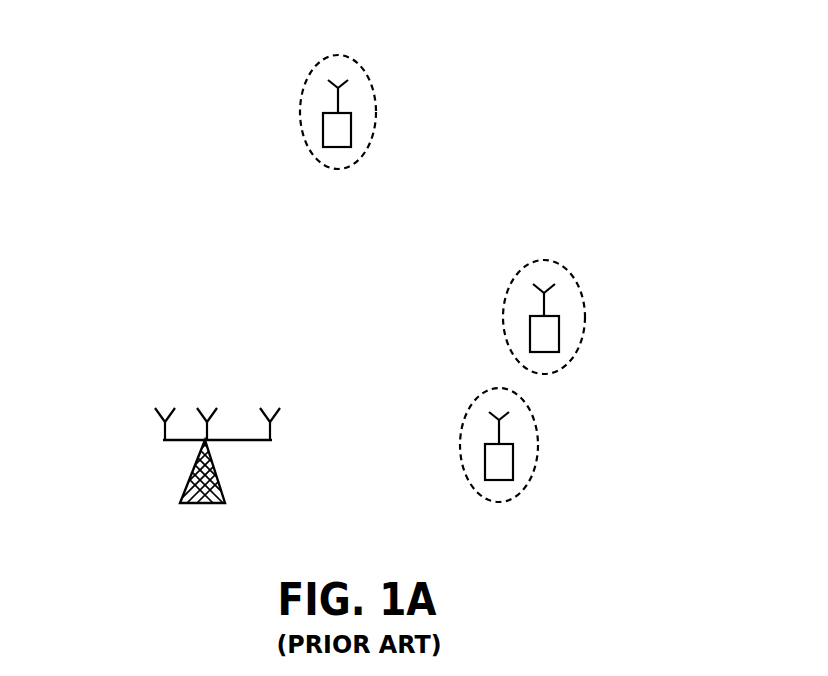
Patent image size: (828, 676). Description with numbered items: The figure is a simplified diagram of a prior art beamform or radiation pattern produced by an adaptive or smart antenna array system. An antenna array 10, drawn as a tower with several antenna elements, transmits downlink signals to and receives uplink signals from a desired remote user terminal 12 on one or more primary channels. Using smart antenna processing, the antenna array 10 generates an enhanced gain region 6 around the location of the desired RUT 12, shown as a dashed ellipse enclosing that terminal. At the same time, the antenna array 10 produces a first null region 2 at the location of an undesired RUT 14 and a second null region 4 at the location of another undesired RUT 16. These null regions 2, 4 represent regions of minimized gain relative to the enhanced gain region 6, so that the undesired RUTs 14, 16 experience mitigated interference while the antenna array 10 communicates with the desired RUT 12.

The null region 2 is at (583, 328).
The null region 4 is at (525, 485).
The enhanced gain region 6 is at (368, 143).
The antenna array 10 is at (177, 443).
The desired remote user terminal 12 is at (352, 110).
The undesired remote user terminal 14 is at (557, 315).
The undesired remote user terminal 16 is at (513, 447).